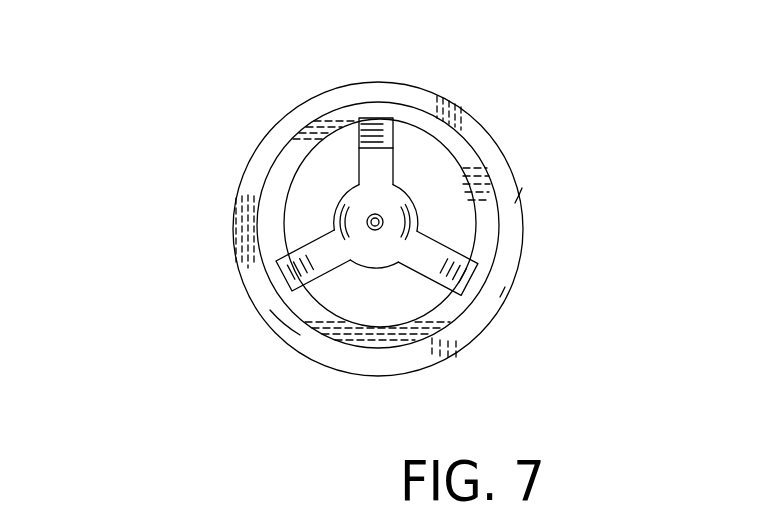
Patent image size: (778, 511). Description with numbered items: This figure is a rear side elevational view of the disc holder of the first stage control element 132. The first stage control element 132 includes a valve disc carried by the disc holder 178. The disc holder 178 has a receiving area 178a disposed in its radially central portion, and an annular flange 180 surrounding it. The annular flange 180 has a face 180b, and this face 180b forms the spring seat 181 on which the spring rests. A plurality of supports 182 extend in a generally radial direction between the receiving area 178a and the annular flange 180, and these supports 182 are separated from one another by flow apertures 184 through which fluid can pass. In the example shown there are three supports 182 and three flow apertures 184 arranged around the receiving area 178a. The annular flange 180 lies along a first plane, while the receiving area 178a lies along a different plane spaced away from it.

The first stage control element 132 is at (555, 190).
The disc holder 178 is at (523, 238).
The receiving area 178a is at (407, 202).
The annular flange 180 is at (260, 157).
The face 180b is at (283, 328).
The spring seat 181 is at (508, 292).
The supports 182 is at (380, 178).
The flow apertures 184 is at (320, 183).